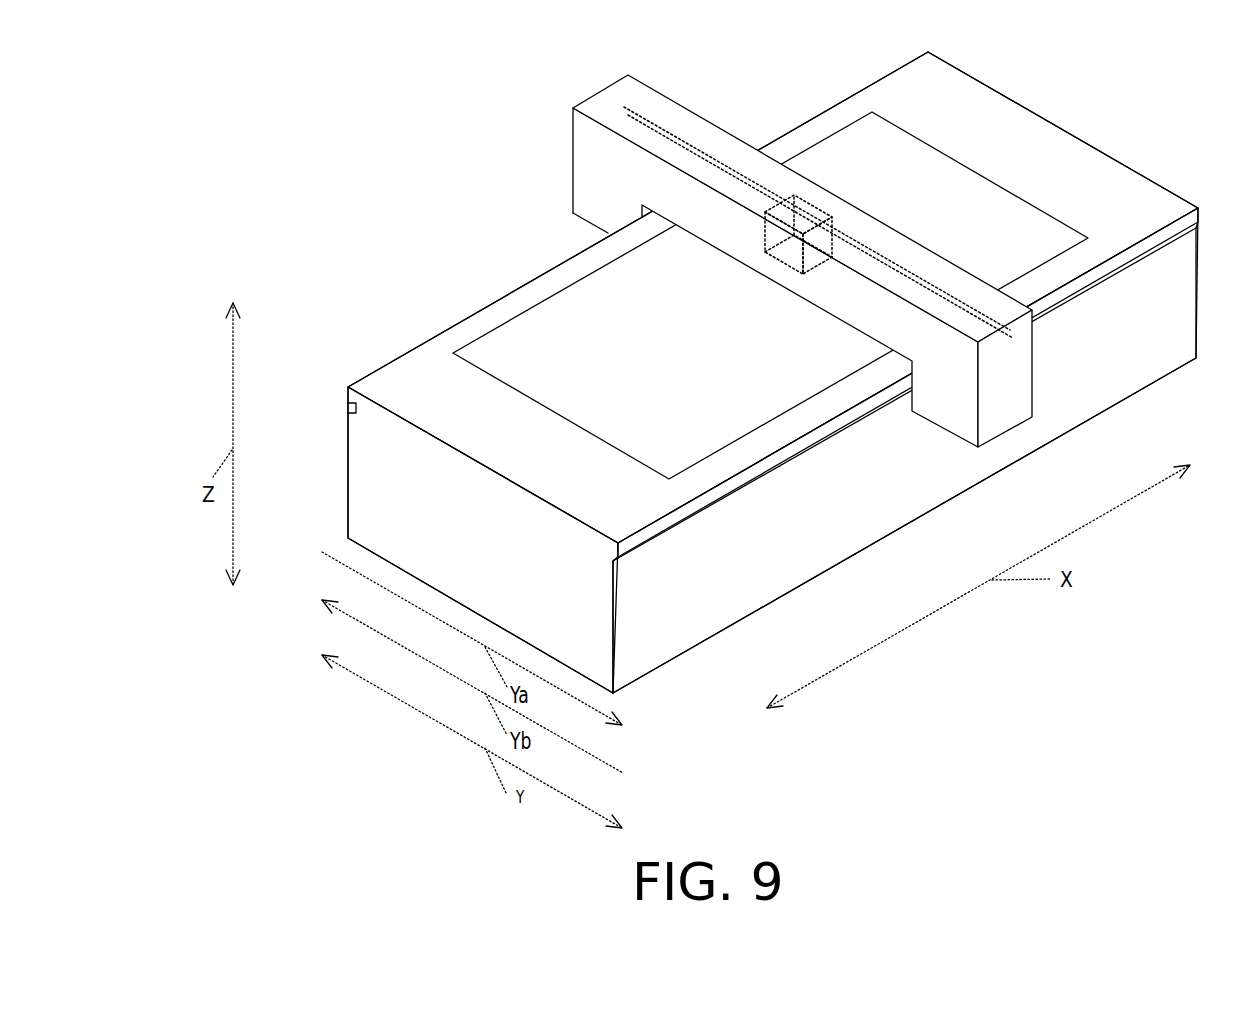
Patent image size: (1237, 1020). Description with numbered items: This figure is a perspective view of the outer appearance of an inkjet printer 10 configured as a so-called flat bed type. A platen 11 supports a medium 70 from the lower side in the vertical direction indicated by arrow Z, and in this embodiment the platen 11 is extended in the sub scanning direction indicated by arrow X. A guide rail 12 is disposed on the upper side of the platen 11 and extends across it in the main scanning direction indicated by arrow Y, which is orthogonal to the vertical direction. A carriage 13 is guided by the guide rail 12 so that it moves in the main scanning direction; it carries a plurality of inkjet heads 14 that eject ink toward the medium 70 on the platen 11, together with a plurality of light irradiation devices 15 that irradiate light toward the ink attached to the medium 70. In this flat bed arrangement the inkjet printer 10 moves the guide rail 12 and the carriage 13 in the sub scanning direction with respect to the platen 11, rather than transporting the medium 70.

The inkjet printer 10 is at (756, 367).
The platen 11 is at (457, 388).
The guide rail 12 is at (625, 106).
The carriage 13 is at (755, 240).
The inkjet head 14 is at (800, 192).
The light irradiation device 15 is at (780, 198).
The medium 70 is at (523, 343).